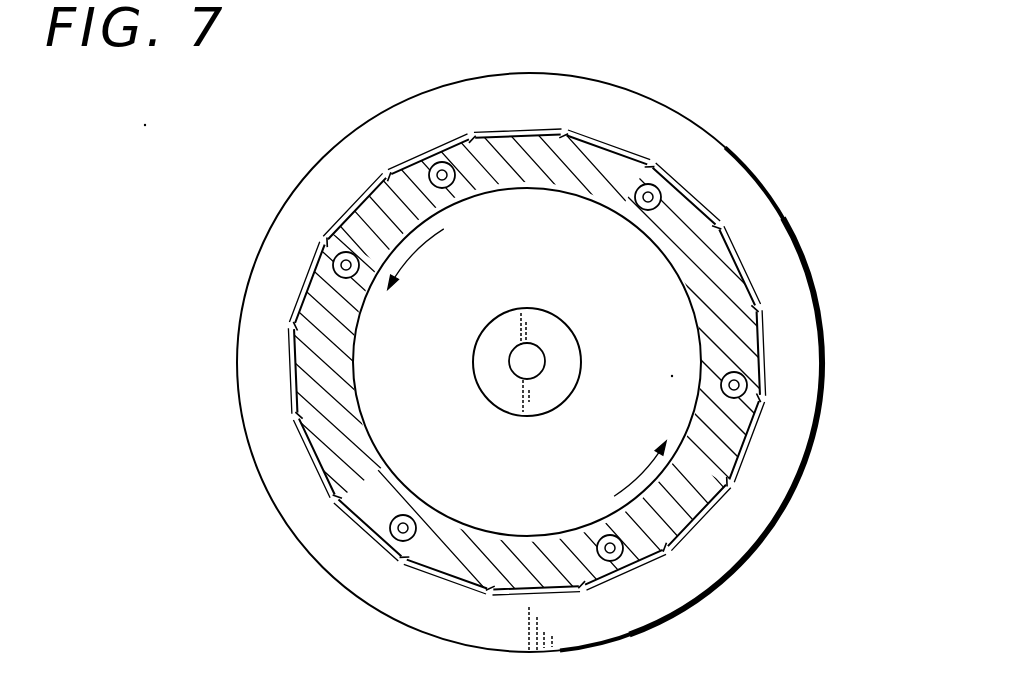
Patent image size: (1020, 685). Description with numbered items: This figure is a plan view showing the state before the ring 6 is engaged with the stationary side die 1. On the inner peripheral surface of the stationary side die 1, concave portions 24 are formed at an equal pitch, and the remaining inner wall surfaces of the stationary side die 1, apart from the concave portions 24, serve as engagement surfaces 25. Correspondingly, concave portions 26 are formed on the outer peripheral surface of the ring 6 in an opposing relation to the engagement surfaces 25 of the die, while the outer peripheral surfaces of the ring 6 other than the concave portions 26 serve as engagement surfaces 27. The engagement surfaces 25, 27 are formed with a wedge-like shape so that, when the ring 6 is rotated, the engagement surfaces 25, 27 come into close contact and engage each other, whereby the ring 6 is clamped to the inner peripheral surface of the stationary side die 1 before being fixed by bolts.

The stationary side die 1 is at (747, 193).
The ring 6 is at (603, 160).
The concave portions 24 is at (390, 150).
The engagement surfaces 25 is at (490, 128).
The concave portions 26 is at (533, 140).
The engagement surfaces 27 is at (417, 158).